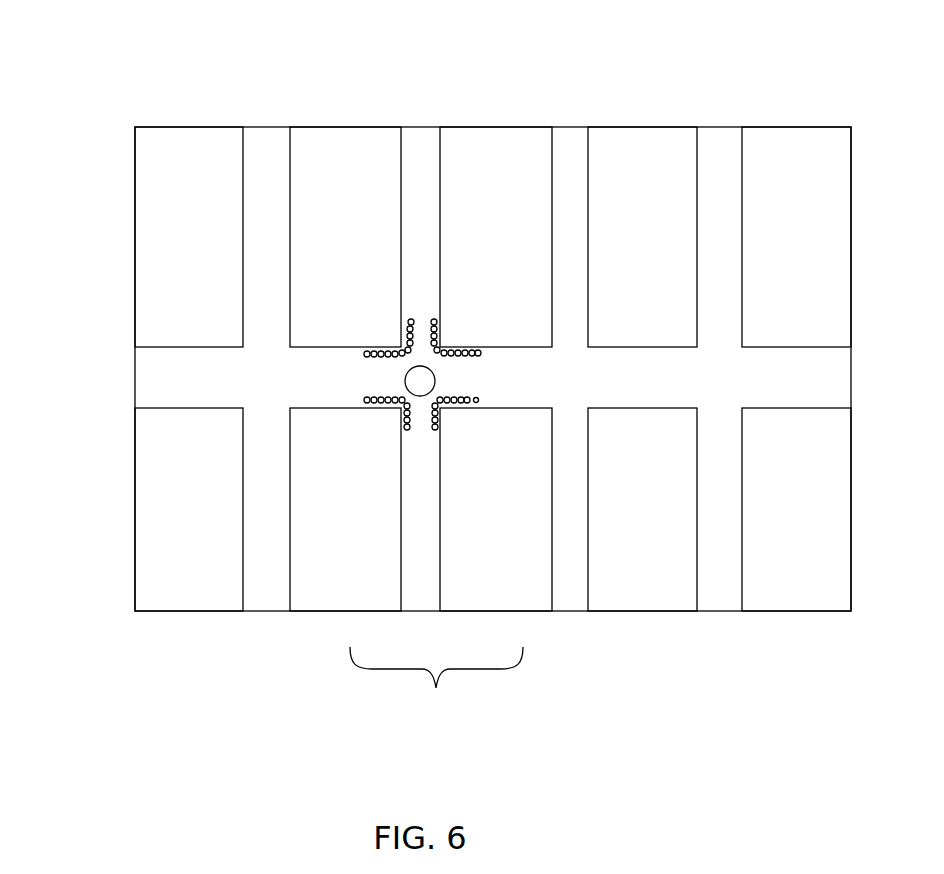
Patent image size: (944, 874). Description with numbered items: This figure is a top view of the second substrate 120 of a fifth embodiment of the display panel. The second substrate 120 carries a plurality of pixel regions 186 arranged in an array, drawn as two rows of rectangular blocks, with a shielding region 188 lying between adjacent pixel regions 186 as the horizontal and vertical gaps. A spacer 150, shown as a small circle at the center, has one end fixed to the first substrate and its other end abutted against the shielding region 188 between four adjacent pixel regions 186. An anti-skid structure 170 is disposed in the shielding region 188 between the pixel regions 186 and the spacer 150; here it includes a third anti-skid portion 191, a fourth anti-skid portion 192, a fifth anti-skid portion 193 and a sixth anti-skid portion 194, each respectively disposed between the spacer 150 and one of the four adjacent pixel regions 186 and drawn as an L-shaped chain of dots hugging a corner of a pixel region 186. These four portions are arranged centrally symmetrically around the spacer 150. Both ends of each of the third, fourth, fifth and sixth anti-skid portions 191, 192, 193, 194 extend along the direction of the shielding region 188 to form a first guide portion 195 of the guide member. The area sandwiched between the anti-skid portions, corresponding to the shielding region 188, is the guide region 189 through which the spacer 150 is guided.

The second substrate 120 is at (200, 93).
The spacer 150 is at (417, 382).
The anti-skid structure 170 is at (436, 684).
The pixel region 186 is at (470, 222).
The shielding region 188 is at (575, 285).
The guide region 189 is at (392, 382).
The third anti-skid portion 191 is at (391, 404).
The fourth anti-skid portion 192 is at (440, 404).
The fifth anti-skid portion 193 is at (370, 357).
The sixth anti-skid portion 194 is at (464, 356).
The first guide portion 195 is at (481, 351).